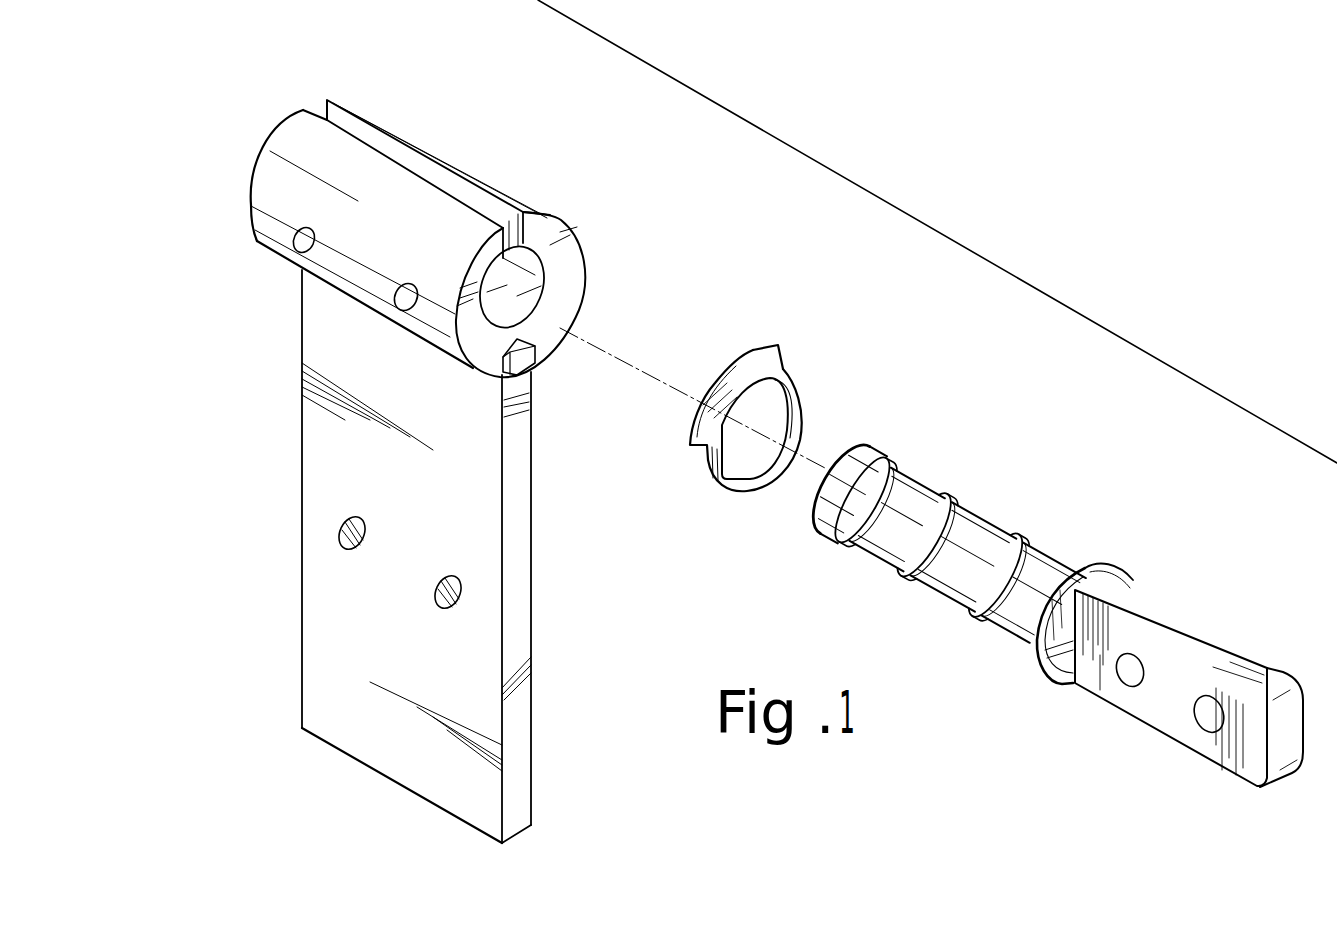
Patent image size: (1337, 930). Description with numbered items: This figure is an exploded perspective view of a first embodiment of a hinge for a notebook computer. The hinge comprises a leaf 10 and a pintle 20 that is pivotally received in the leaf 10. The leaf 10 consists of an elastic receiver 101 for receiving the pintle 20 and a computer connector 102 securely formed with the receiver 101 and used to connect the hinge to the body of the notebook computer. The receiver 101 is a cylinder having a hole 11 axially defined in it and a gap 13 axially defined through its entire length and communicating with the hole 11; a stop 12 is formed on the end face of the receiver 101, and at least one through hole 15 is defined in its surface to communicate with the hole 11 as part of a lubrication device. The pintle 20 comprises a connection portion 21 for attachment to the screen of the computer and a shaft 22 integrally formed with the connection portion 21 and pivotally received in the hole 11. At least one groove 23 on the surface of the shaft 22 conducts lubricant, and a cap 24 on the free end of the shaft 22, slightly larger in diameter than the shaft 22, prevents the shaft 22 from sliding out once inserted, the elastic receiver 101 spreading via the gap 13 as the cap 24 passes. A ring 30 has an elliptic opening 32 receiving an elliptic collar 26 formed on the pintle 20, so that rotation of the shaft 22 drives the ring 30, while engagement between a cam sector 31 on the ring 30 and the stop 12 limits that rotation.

The leaf 10 is at (584, 591).
The elastic receiver 101 is at (413, 91).
The computer connector 102 is at (301, 556).
The hole 11 is at (530, 278).
The stop 12 is at (530, 372).
The gap 13 is at (470, 200).
The through hole 15 is at (300, 240).
The pintle 20 is at (1188, 566).
The connection portion 21 is at (1212, 645).
The shaft 22 is at (995, 528).
The groove 23 is at (957, 500).
The cap 24 is at (835, 530).
The elliptic collar 26 is at (1083, 567).
The ring 30 is at (823, 378).
The cam sector 31 is at (748, 375).
The elliptic opening 32 is at (790, 418).